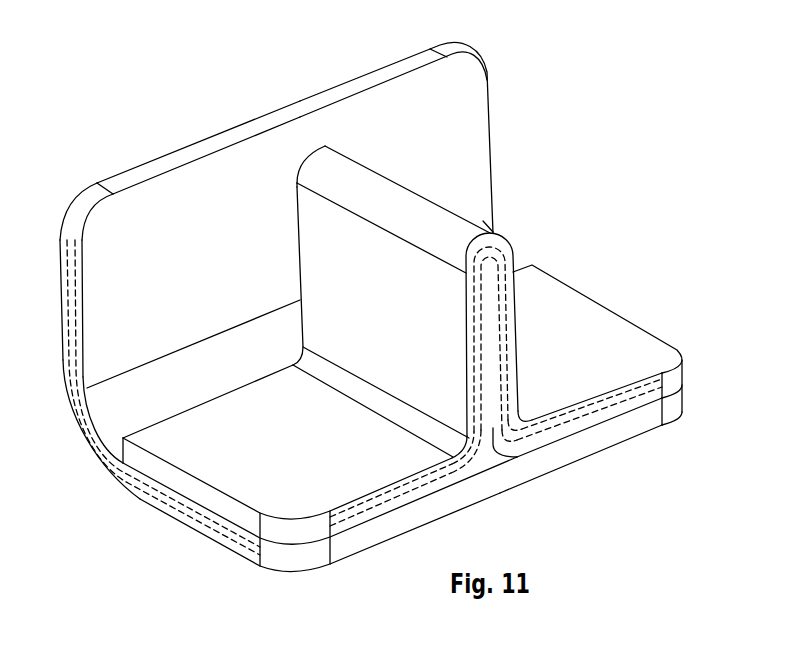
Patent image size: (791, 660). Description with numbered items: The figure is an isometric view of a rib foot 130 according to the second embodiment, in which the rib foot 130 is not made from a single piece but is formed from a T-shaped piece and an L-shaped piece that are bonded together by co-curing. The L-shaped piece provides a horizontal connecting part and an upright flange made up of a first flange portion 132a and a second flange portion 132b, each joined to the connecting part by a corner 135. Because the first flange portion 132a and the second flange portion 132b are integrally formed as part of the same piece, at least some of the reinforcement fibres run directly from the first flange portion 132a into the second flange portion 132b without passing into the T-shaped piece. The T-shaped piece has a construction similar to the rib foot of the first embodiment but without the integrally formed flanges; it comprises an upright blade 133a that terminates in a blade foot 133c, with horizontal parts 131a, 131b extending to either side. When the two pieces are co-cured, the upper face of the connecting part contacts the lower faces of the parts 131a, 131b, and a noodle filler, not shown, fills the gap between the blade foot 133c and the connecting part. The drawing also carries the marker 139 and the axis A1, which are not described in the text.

The rib foot 130 is at (552, 119).
The first flange part of T-shaped piece 131a is at (330, 456).
The second flange part of T-shaped piece 131b is at (610, 351).
The first flange portion 132a is at (196, 271).
The second flange portion 132b is at (462, 146).
The blade of T-shaped piece 133a is at (412, 324).
The blade foot 133c is at (495, 462).
The corner 135 is at (220, 381).
The divider ridge junction 139 is at (288, 242).
The bend axis A1 is at (110, 470).